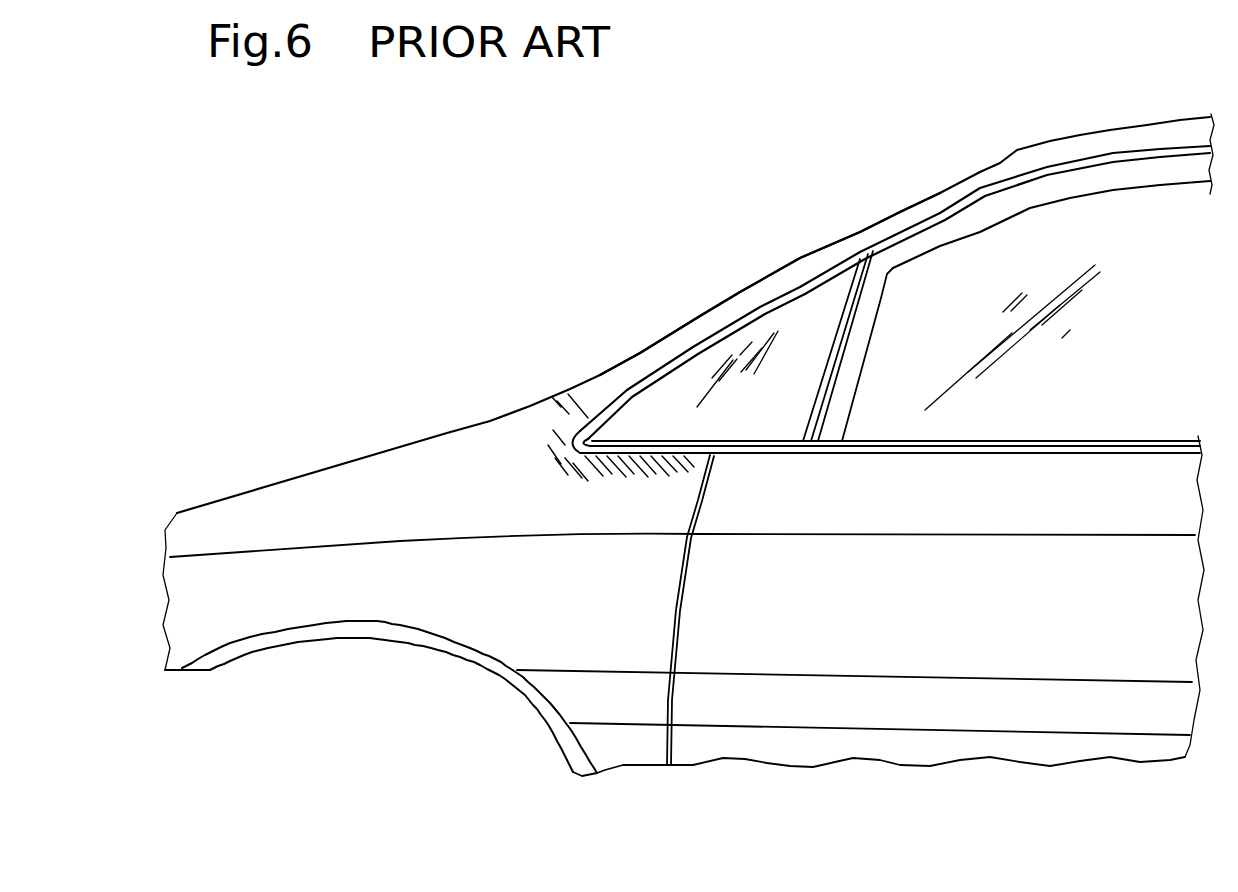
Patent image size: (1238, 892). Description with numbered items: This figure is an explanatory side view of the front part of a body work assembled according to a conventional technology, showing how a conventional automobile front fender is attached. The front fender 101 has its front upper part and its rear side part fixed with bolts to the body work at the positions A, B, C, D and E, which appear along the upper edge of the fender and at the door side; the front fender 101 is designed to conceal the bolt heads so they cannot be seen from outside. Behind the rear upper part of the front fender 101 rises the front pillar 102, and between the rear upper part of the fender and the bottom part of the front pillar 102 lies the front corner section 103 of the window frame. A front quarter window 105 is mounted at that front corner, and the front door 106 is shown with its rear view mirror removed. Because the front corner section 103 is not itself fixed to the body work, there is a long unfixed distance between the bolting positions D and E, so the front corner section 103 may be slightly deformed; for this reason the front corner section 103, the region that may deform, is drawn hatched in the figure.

The front fender 101 is at (484, 614).
The front pillar 102 is at (690, 318).
The front corner section 103 is at (635, 473).
The front quarter window 105 is at (815, 300).
The front door 106 is at (877, 652).
The bolting position A is at (190, 514).
The bolting position B is at (253, 494).
The bolting position C is at (341, 470).
The bolting position D is at (444, 438).
The bolting position E is at (708, 499).